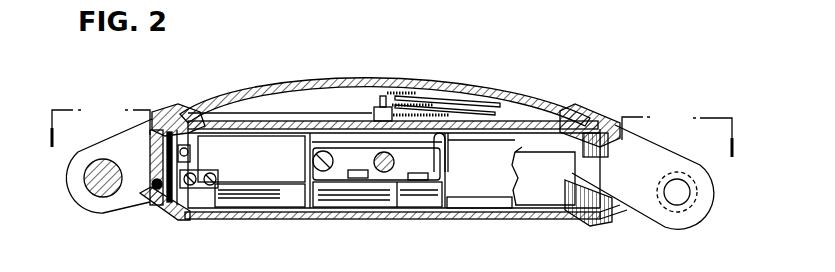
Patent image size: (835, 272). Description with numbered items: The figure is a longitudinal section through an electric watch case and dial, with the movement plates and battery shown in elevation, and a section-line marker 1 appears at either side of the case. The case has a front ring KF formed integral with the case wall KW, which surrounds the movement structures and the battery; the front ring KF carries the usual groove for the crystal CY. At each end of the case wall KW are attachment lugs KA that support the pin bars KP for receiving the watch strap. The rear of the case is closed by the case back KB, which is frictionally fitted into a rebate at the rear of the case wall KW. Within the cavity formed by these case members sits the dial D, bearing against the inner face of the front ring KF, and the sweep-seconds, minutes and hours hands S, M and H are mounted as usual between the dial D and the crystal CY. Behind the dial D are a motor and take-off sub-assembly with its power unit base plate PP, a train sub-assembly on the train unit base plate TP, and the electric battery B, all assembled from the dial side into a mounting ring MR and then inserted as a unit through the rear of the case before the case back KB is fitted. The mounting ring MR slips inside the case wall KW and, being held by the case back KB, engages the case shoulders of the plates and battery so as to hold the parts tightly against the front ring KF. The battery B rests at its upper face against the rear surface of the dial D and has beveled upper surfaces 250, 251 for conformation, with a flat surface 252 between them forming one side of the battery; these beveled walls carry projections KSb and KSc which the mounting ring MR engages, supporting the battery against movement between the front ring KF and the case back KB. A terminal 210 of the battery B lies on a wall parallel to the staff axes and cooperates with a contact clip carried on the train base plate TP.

The section line 1 is at (745, 142).
The crystal CY is at (286, 84).
The front ring KF is at (173, 108).
The case wall KW is at (152, 142).
The case back KB is at (152, 165).
The attachment lugs KA is at (75, 180).
The pin bars KP is at (93, 198).
The mounting ring MR is at (157, 201).
The power unit base plate PP is at (244, 170).
The train unit base plate TP is at (378, 170).
The sweep-seconds hand S is at (409, 90).
The minutes hand M is at (413, 110).
The hours hand H is at (433, 120).
The beveled upper surface 250 is at (480, 137).
The dial D is at (522, 125).
The flat surface 252 is at (553, 137).
The beveled upper surface 251 is at (575, 147).
The case shoulder KSc is at (573, 140).
The case shoulder KSb is at (460, 150).
The battery terminal 210 is at (447, 168).
The electric battery B is at (486, 204).